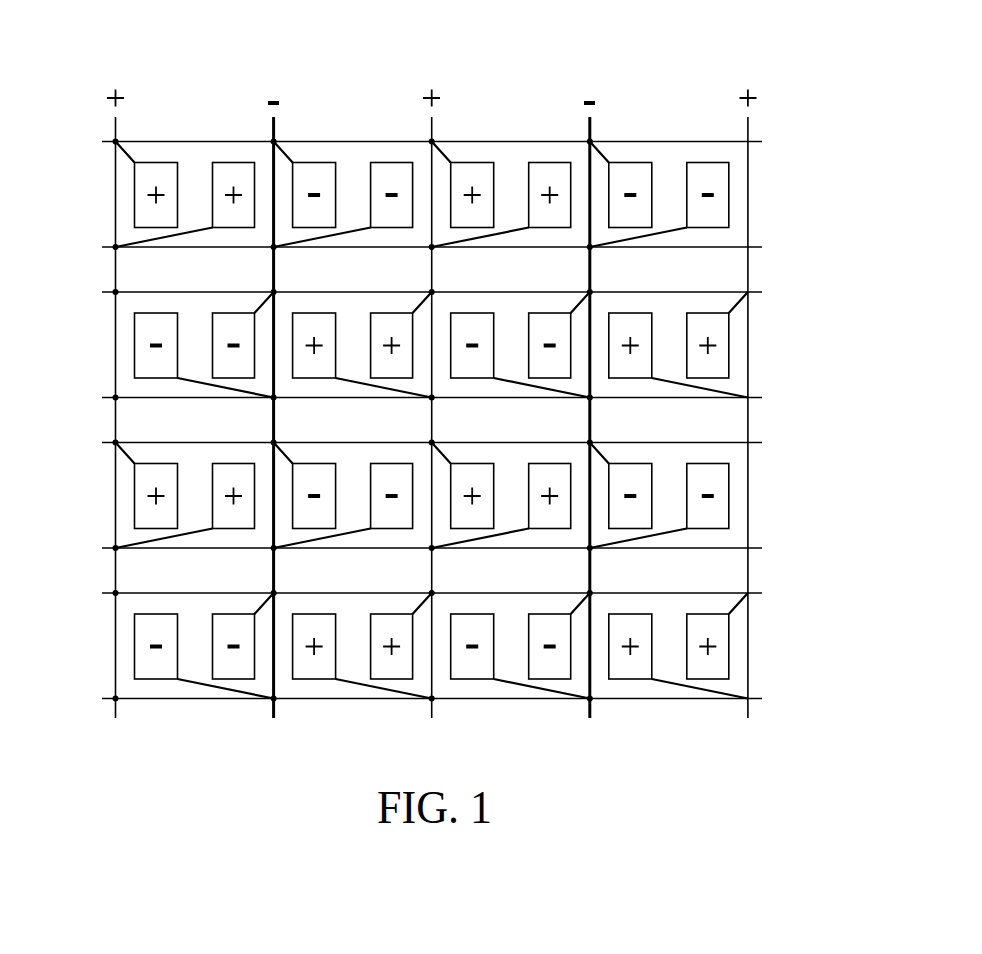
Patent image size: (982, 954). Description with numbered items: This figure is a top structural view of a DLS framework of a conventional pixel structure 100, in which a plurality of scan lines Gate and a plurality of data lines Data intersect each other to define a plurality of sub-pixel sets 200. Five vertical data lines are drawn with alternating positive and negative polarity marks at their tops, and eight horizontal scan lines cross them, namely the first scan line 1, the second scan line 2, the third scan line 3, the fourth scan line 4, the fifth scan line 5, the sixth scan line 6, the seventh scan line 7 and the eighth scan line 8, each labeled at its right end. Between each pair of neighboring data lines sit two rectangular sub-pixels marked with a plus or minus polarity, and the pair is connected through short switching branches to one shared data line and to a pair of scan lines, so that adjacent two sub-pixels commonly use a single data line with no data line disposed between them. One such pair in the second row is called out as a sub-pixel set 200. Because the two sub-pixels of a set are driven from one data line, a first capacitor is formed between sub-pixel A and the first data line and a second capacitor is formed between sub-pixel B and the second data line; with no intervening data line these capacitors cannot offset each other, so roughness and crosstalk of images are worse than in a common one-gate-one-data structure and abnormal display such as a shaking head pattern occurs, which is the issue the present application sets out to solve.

The pixel structure 100 is at (262, 62).
The sub-pixel set 200 is at (174, 303).
The gate line Gate1 1 is at (478, 141).
The gate line Gate2 2 is at (478, 246).
The gate line Gate3 3 is at (478, 291).
The gate line Gate4 4 is at (478, 397).
The gate line Gate5 5 is at (478, 442).
The gate line Gate6 6 is at (478, 547).
The gate line Gate7 7 is at (478, 592).
The gate line Gate8 8 is at (478, 698).